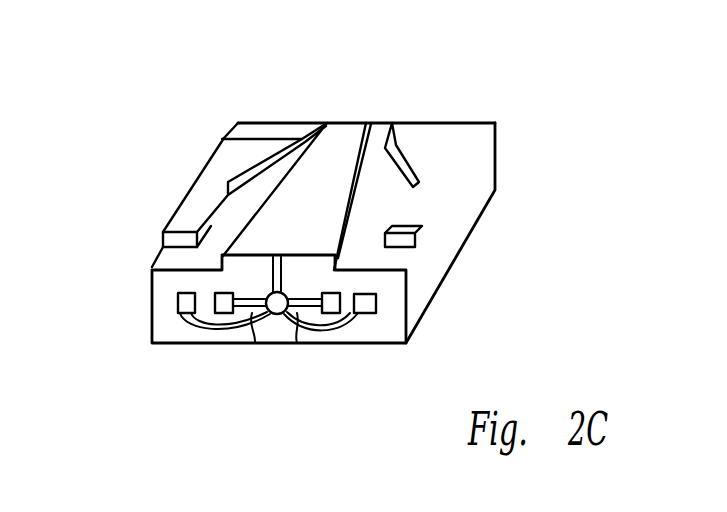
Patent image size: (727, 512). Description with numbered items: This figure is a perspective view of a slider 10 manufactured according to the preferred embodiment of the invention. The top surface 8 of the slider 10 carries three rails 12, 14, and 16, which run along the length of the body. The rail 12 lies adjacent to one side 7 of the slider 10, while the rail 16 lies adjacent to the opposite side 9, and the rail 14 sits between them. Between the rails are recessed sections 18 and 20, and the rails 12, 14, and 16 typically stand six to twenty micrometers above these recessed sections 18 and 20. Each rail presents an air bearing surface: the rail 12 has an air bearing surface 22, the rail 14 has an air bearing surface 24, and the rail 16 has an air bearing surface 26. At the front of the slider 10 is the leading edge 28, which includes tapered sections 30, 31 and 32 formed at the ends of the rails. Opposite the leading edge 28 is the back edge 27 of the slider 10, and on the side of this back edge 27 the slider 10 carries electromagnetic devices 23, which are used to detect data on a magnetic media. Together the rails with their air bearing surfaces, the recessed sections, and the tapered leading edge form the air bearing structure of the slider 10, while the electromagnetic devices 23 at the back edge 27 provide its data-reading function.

The side 7 is at (151, 306).
The top surface 8 is at (182, 253).
The side 9 is at (422, 290).
The slider 10 is at (78, 425).
The rail 12 is at (193, 188).
The rail 14 is at (350, 212).
The rail 16 is at (497, 127).
The recessed section 18 is at (233, 218).
The recessed section 20 is at (417, 138).
The air bearing surface 22 is at (235, 160).
The electromagnetic devices 23 is at (218, 343).
The air bearing surface 24 is at (336, 165).
The air bearing surface 26 is at (430, 173).
The back edge 27 is at (385, 262).
The leading edge 28 is at (290, 124).
The tapered section 30 is at (255, 127).
The tapered section 31 is at (328, 168).
The tapered section 32 is at (375, 187).